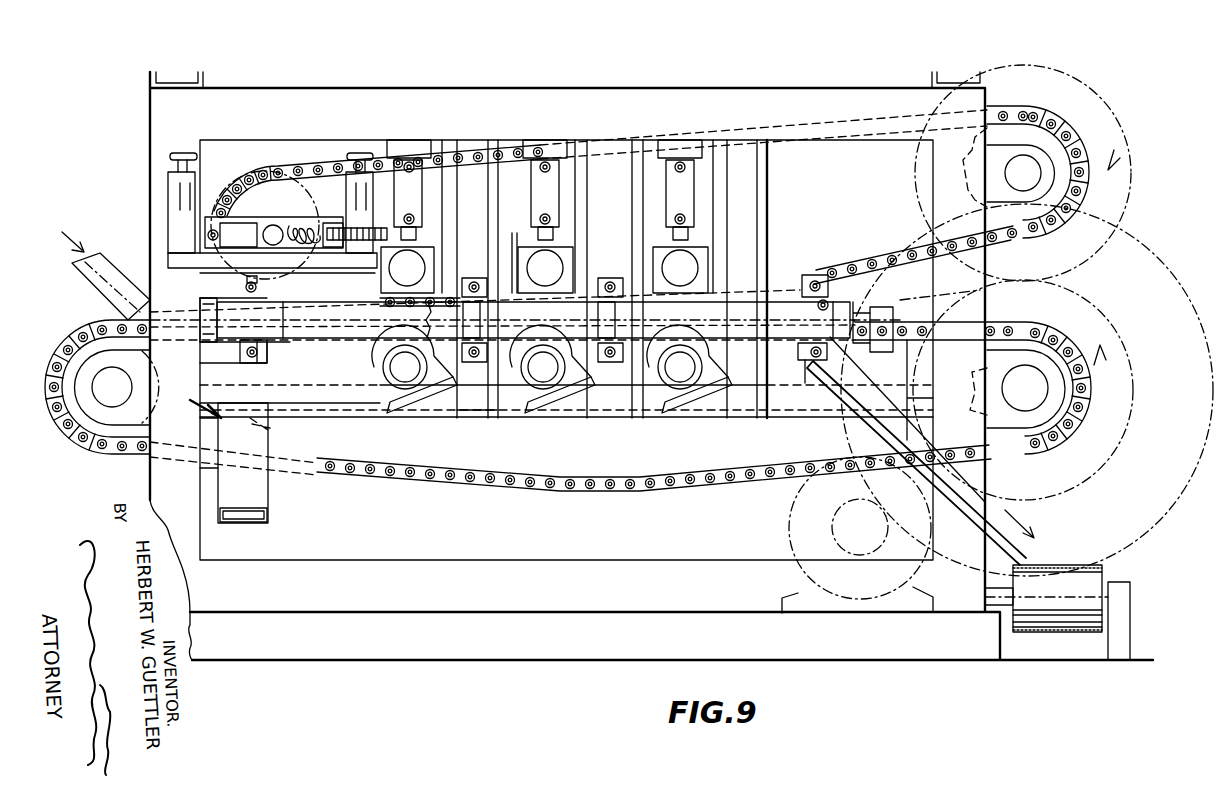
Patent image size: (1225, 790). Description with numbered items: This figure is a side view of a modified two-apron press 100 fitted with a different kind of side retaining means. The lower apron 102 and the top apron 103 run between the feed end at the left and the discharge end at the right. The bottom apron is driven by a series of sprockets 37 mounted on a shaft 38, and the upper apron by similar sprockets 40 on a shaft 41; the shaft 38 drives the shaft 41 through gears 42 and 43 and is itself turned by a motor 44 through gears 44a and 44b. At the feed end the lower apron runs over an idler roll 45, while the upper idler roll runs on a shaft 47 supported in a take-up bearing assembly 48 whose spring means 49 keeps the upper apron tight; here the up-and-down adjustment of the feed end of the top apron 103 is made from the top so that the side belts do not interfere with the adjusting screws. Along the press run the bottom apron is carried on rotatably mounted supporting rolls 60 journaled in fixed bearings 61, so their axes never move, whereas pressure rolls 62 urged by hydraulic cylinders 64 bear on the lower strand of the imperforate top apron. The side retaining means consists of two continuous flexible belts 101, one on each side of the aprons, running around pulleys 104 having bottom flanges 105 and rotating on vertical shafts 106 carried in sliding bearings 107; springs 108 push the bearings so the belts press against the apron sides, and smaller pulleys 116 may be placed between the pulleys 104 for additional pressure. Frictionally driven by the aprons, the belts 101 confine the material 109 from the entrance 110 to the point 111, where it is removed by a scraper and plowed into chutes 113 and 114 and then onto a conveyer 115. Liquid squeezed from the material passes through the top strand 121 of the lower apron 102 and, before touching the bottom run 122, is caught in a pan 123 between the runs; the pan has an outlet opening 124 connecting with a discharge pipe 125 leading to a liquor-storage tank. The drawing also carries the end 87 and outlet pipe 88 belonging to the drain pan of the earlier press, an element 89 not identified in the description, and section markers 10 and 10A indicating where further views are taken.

The work bar / sheet 10 is at (596, 314).
The section line 10A is at (462, 50).
The sprockets 37 is at (975, 398).
The shaft 38 is at (1034, 396).
The sprockets 40 is at (1034, 143).
The shaft 41 is at (1032, 181).
The gear 42 is at (1137, 352).
The gear 43 is at (1130, 182).
The motor 44 is at (790, 530).
The gear 44a is at (822, 542).
The gear 44b is at (1188, 485).
The idler roll 45 is at (70, 395).
The shaft 47 is at (276, 226).
The take-up bearing assembly 48 is at (253, 225).
The spring means 49 is at (316, 226).
The supporting rolls 60 is at (432, 366).
The fixed bearings 61 is at (413, 374).
The pressure rolls 62 is at (555, 275).
The hydraulic cylinders 64 is at (418, 195).
The end 87 is at (195, 410).
The outlet pipe 88 is at (252, 496).
The support bar 89 is at (338, 403).
The press 100 is at (282, 80).
The continuous flexible belts 101 is at (352, 340).
The lower apron 102 is at (116, 458).
The top apron 103 is at (327, 166).
The pulleys 104 is at (240, 285).
The bottom flanges 105 is at (212, 343).
The vertical shafts 106 is at (268, 350).
The sliding bearings 107 is at (262, 368).
The springs 108 is at (268, 360).
The material 109 is at (128, 253).
The entrance 110 is at (200, 308).
The point 111 is at (866, 308).
The chute 113 is at (890, 380).
The chute 114 is at (952, 520).
The conveyer 115 is at (1080, 558).
The pulleys 116 is at (464, 335).
The top strand 121 is at (925, 310).
The bottom run 122 is at (622, 492).
The pan 123 is at (368, 420).
The outlet opening 124 is at (270, 432).
The discharge pipe 125 is at (240, 522).